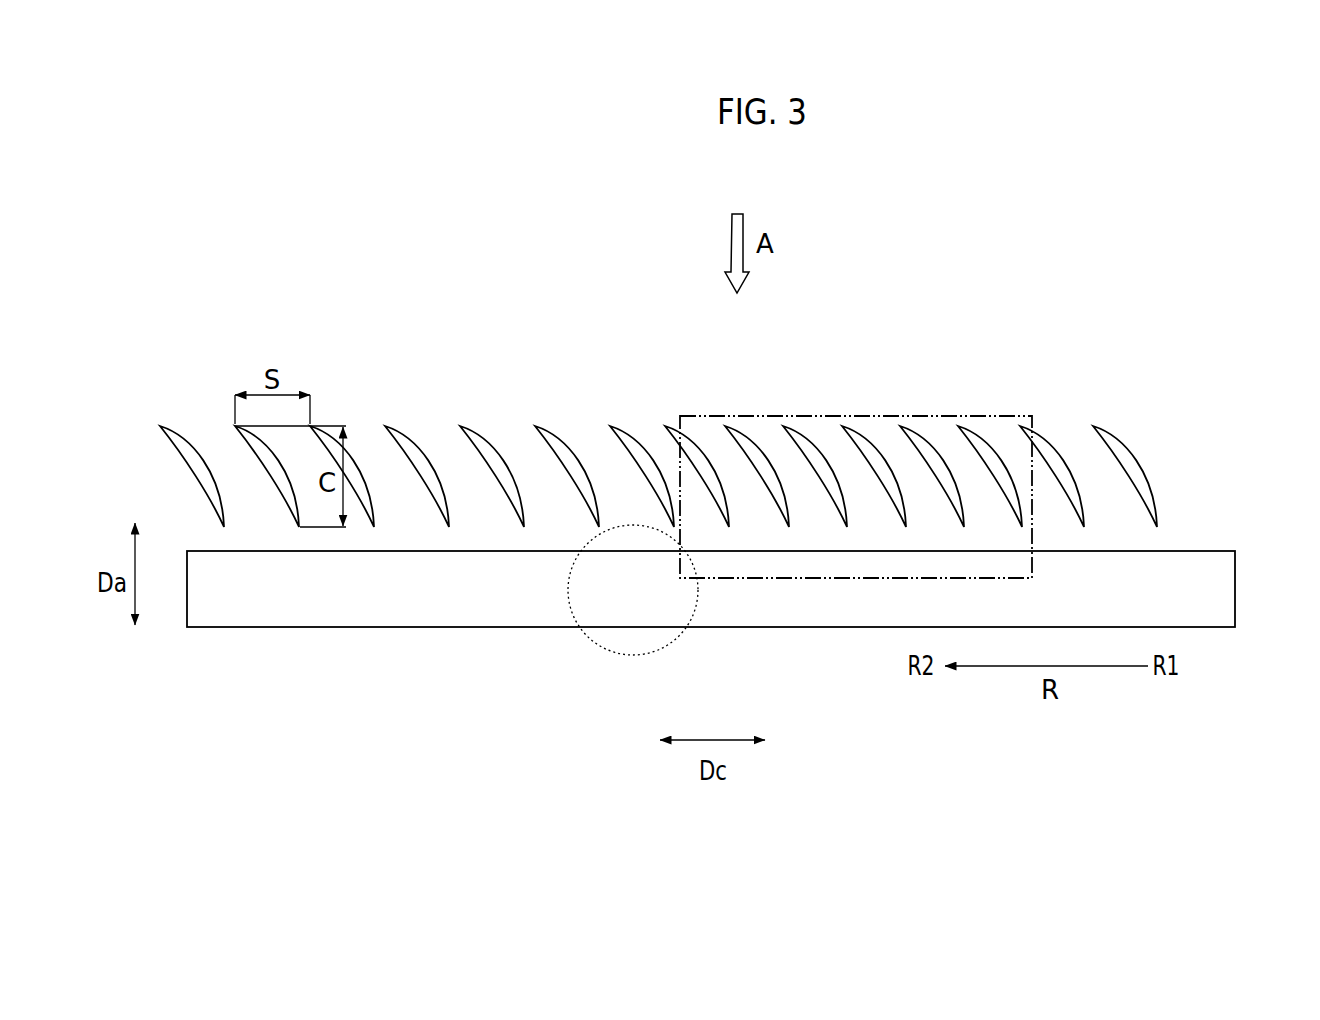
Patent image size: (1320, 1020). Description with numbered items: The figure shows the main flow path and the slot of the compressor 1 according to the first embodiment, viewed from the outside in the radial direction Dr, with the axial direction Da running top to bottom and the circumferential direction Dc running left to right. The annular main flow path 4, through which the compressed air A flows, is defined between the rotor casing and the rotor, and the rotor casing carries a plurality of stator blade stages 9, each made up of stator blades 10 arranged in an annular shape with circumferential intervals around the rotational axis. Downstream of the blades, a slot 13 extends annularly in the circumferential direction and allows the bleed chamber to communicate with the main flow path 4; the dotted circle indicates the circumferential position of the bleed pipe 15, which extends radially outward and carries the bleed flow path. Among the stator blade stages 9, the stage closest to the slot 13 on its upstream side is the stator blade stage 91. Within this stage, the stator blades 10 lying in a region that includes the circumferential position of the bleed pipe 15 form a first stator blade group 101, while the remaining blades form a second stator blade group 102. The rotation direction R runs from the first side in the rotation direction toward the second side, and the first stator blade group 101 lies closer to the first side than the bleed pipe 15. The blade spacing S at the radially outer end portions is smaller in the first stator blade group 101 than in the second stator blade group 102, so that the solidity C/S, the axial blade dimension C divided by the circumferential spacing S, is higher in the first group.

The compressor 1 is at (1156, 300).
The main flow path 4 is at (594, 459).
The stator blade stage 9 is at (636, 428).
The stator blade 10 is at (207, 481).
The slot 13 is at (1218, 606).
The bleed pipe 15 is at (677, 638).
The stator blade stage 91 is at (677, 423).
The first stator blade group 101 is at (1030, 402).
The second stator blade group 102 is at (160, 374).